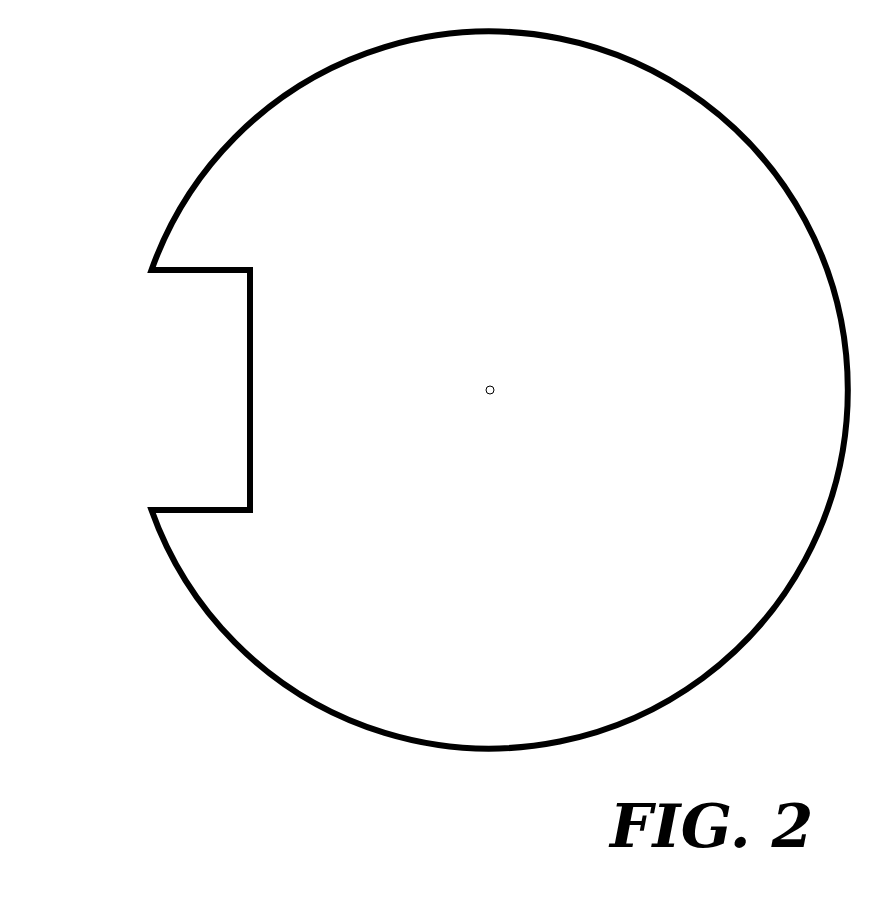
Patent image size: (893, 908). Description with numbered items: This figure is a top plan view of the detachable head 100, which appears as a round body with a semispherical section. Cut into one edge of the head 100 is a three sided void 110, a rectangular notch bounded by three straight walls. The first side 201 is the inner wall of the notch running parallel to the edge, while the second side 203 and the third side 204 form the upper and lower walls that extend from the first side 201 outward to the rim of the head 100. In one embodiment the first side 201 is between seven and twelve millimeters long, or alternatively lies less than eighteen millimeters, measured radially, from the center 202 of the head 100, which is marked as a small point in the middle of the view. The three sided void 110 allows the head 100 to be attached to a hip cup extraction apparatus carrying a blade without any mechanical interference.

The head 100 is at (146, 138).
The three sided void 110 is at (206, 360).
The first side 201 is at (247, 479).
The center 202 is at (486, 390).
The second side 203 is at (200, 267).
The third side 204 is at (178, 514).